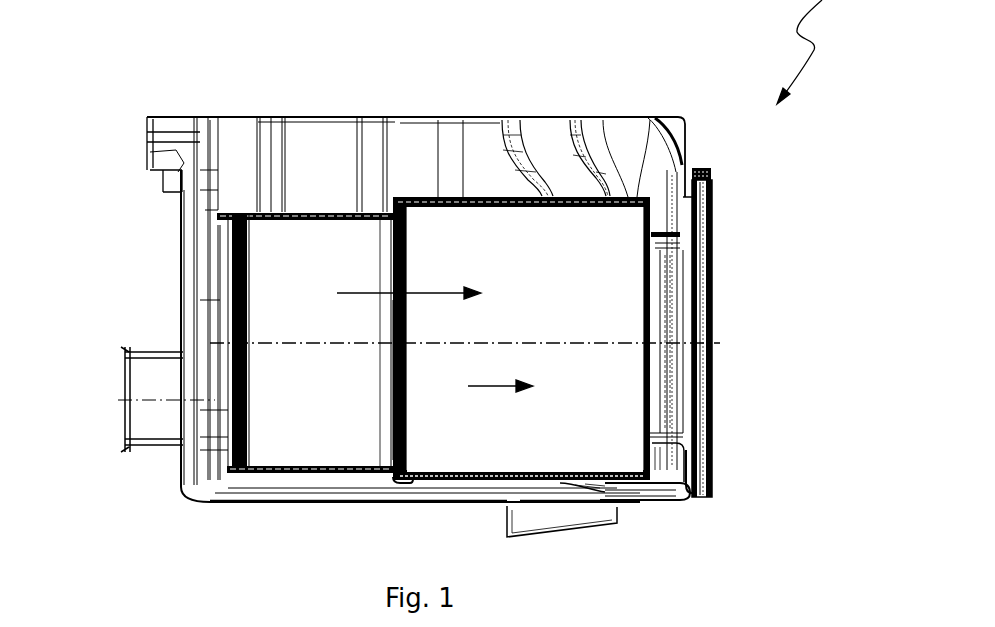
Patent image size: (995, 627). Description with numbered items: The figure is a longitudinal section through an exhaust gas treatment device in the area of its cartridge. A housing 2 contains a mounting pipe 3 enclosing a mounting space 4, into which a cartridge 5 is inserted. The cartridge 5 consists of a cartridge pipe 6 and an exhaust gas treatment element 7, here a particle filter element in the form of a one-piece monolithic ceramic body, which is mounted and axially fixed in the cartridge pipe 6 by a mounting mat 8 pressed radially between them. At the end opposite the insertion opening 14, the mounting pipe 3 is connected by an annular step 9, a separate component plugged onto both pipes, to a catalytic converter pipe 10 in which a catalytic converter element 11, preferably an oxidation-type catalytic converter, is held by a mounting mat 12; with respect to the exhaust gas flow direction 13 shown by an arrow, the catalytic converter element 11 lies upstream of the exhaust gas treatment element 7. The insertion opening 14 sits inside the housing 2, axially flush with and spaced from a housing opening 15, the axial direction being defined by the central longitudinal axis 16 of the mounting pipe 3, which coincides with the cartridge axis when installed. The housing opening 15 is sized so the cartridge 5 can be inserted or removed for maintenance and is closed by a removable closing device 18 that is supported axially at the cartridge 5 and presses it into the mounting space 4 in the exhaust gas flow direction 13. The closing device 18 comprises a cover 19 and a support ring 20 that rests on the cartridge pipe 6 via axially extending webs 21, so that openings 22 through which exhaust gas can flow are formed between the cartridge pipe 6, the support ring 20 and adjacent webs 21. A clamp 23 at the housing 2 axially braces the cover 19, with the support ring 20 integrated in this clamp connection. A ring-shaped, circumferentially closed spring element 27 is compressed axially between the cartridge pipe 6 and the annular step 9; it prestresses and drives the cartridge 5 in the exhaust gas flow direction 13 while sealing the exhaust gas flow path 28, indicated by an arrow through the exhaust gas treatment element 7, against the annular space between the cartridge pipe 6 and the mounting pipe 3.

The housing 2 is at (478, 112).
The mounting pipe 3 is at (421, 183).
The mounting space 4 is at (440, 208).
The cartridge 5 is at (638, 183).
The cartridge pipe 6 is at (513, 208).
The exhaust gas treatment element 7 is at (529, 361).
The mounting mat 8 is at (566, 472).
The annular step 9 is at (387, 210).
The catalytic converter pipe 10 is at (302, 212).
The catalytic converter element 11 is at (316, 380).
The mounting mat 12 is at (317, 470).
The exhaust gas flow direction 13 is at (490, 390).
The insertion opening 14 is at (625, 197).
The housing opening 15 is at (688, 473).
The central longitudinal axis 16 is at (637, 339).
The closing device 18 is at (728, 224).
The cover 19 is at (713, 298).
The support ring 20 is at (687, 262).
The webs 21 is at (662, 243).
The openings 22 is at (660, 380).
The clamp 23 is at (700, 167).
The spring element 27 is at (407, 415).
The exhaust gas flow path 28 is at (441, 298).